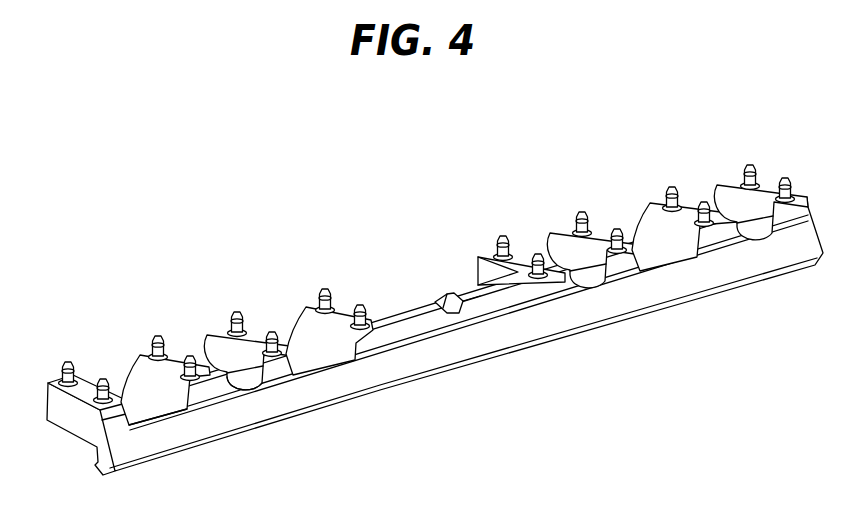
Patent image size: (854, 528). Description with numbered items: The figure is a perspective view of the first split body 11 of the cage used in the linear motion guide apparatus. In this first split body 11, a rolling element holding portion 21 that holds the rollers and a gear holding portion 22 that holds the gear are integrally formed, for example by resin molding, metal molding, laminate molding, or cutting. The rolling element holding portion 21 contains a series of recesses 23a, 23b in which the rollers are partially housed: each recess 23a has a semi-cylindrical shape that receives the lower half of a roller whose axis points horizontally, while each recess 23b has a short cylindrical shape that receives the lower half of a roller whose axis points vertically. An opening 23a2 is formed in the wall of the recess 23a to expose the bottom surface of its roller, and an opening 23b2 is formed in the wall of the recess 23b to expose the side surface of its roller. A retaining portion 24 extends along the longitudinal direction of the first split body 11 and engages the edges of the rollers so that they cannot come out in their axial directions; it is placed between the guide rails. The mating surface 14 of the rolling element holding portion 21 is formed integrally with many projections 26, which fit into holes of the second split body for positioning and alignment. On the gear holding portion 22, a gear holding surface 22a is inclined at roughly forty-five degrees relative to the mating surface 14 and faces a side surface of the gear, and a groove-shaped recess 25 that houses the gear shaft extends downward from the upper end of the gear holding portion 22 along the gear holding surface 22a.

The first split body 11 is at (437, 190).
The mating surface 14 is at (82, 395).
The rolling element holding portion 21 is at (459, 310).
The gear holding portion 22 is at (406, 300).
The gear holding surface 22a is at (460, 287).
The recess 23a is at (231, 368).
The recess 23b is at (259, 369).
The opening 23a2 is at (200, 410).
The opening 23b2 is at (267, 373).
The retaining portion 24 is at (432, 345).
The recess 25 is at (456, 306).
The projections 26 is at (105, 383).